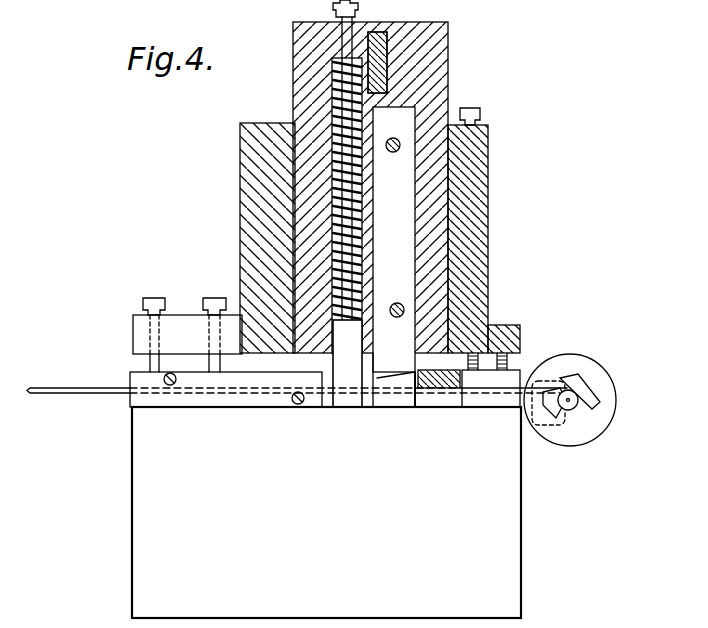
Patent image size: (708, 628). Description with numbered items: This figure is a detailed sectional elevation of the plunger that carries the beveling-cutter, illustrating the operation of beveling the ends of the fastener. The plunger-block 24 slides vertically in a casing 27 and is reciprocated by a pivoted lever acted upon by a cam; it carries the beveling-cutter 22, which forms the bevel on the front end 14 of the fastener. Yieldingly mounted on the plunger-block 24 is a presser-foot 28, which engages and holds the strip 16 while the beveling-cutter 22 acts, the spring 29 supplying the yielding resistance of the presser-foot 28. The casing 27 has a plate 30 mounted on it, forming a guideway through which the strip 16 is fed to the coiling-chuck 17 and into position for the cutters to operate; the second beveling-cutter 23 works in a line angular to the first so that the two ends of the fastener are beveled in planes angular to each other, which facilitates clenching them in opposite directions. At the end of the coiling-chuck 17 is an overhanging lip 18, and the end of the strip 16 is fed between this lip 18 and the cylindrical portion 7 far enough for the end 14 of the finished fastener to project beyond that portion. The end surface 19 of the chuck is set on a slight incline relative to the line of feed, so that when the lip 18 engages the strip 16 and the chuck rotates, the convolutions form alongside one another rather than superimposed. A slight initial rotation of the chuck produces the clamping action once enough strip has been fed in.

The cylindrical portion 7 is at (568, 410).
The front end of the fastener 14 is at (590, 395).
The strip 16 is at (68, 392).
The coiling-chuck 17 is at (607, 423).
The lip 18 is at (570, 387).
The end surface of the coiling-chuck 19 is at (552, 402).
The beveling-cutter 22 is at (394, 257).
The beveling-cutter 23 is at (437, 390).
The plunger-block 24 is at (438, 86).
The casing 27 is at (258, 203).
The presser-foot 28 is at (347, 377).
The spring 29 is at (347, 88).
The plate 30 is at (167, 400).